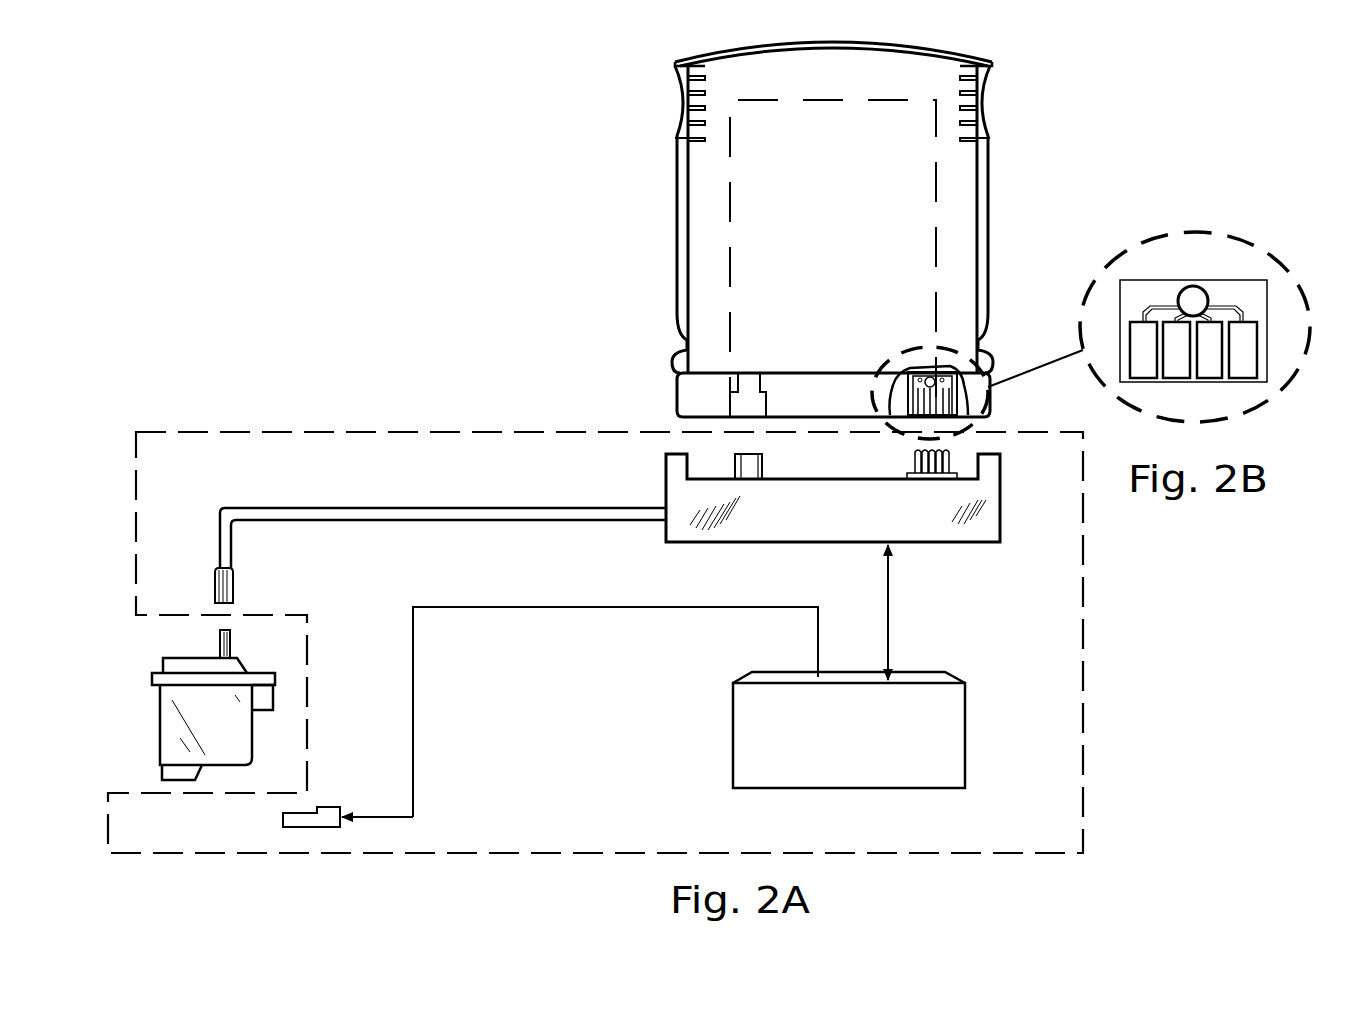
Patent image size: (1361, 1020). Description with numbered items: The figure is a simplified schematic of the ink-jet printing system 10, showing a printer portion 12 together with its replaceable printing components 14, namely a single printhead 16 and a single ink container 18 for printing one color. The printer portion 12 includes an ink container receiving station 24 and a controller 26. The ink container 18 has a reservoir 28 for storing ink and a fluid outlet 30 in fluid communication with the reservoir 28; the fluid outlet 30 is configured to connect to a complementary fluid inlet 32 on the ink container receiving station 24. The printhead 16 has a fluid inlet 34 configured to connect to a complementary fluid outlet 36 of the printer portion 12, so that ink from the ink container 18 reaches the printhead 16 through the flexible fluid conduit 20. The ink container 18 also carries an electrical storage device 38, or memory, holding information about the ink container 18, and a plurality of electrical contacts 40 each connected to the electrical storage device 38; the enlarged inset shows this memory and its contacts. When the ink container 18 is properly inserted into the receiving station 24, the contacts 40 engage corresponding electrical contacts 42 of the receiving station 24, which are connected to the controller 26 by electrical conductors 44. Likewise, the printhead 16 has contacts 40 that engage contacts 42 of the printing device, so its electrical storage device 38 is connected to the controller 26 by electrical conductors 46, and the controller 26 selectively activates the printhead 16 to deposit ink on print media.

In FIG. 2A, the ink-jet printing system 10 is at (589, 377).
In FIG. 2A, the printer portion 12 is at (1088, 614).
In FIG. 2A, the replaceable printing components 14 is at (589, 377).
In FIG. 2A, the printhead 16 is at (225, 699).
In FIG. 2A, the ink container 18 is at (990, 182).
In FIG. 2A, the flexible fluid conduit 20 is at (598, 522).
In FIG. 2A, the ink container receiving station 24 is at (1002, 497).
In FIG. 2A, the controller 26 is at (942, 789).
In FIG. 2A, the reservoir 28 is at (730, 192).
In FIG. 2A, the fluid outlet 30 is at (733, 400).
In FIG. 2A, the fluid inlet 32 is at (763, 462).
In FIG. 2A, the fluid inlet 34 is at (218, 633).
In FIG. 2A, the fluid outlet 36 is at (234, 572).
In FIG. 2A, the electrical storage device 38 is at (932, 378).
In FIG. 2B, the electrical storage device 38 is at (1190, 293).
In FIG. 2A, the electrical contacts 40 is at (264, 712).
In FIG. 2B, the electrical contacts 40 is at (1247, 352).
In FIG. 2A, the electrical contacts 42 is at (912, 459).
In FIG. 2A, the electrical conductors 44 is at (888, 620).
In FIG. 2A, the electrical conductors 46 is at (652, 608).